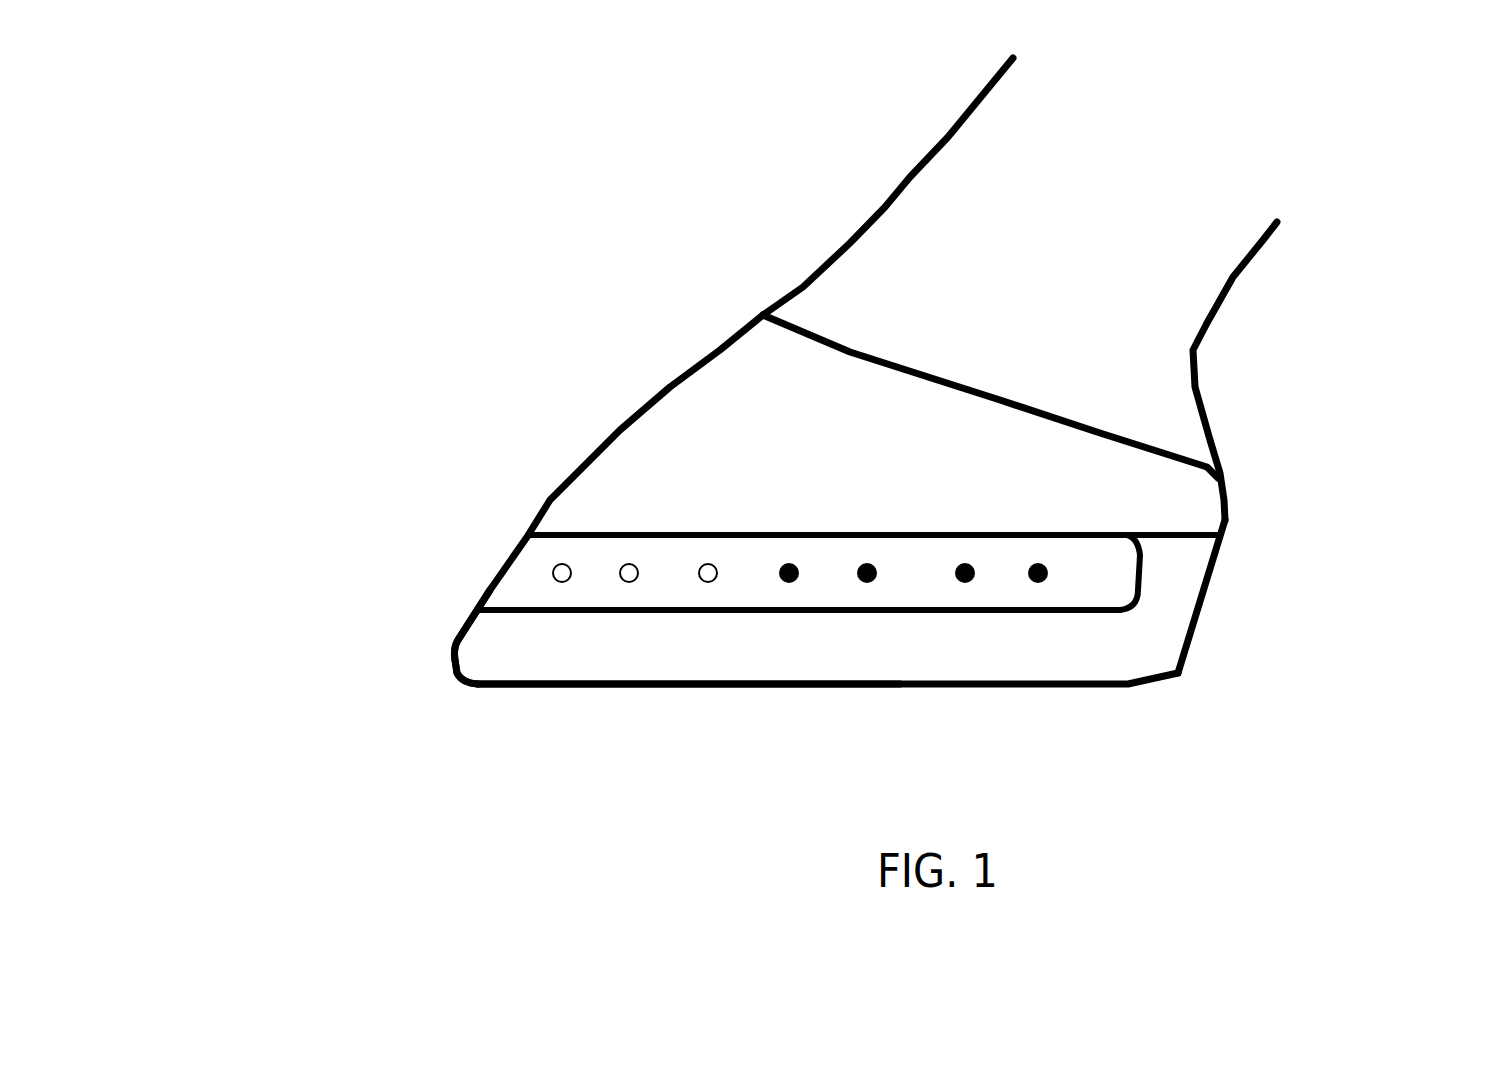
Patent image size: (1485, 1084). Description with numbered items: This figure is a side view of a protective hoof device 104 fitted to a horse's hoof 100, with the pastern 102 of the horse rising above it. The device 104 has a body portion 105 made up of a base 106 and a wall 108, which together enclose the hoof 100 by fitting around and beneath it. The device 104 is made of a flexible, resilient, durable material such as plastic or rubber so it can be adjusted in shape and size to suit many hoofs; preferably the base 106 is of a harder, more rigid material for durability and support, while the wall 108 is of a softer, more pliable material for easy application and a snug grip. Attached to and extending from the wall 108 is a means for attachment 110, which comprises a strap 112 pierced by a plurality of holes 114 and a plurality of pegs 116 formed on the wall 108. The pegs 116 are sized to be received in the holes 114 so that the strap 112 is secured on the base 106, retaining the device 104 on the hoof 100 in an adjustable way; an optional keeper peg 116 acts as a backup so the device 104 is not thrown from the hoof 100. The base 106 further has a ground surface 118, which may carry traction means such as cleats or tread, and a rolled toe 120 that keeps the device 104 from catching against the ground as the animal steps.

The hoof 100 is at (720, 407).
The pastern 102 is at (895, 277).
The device 104 is at (1291, 606).
The body portion 105 is at (1201, 596).
The base 106 is at (727, 668).
The wall 108 is at (1163, 567).
The means for attachment 110 is at (450, 532).
The strap 112 is at (643, 545).
The holes 114 is at (717, 580).
The pegs 116 is at (973, 585).
The ground surface 118 is at (580, 687).
The rolled toe 120 is at (450, 662).